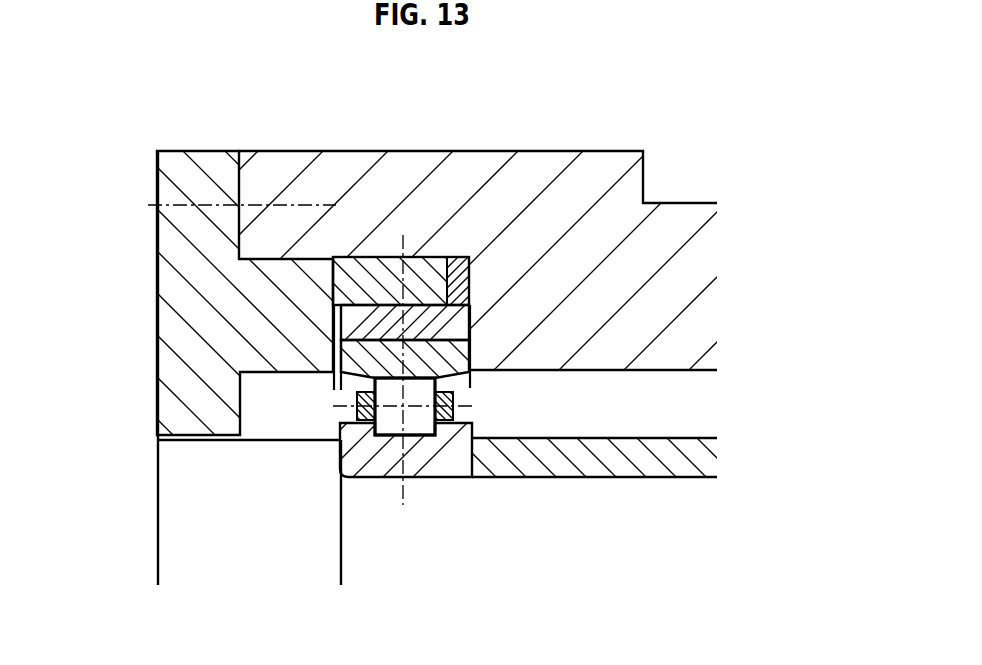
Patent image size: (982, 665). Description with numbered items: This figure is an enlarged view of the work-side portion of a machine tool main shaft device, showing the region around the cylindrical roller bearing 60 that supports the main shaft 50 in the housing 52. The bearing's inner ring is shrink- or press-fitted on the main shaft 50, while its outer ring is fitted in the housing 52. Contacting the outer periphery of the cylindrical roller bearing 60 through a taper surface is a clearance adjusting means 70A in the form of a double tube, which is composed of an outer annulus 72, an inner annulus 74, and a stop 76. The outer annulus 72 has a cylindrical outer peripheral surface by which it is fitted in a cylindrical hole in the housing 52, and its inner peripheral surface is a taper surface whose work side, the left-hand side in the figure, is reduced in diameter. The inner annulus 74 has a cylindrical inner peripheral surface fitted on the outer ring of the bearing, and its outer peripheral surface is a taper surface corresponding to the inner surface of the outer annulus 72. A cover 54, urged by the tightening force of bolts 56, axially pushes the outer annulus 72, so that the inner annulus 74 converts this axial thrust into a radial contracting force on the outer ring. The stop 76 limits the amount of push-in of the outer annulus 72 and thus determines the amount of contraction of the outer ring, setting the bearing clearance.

The main shaft 50 is at (192, 515).
The housing 52 is at (602, 173).
The cover 54 is at (210, 160).
The bolts 56 is at (287, 205).
The cylindrical roller bearing 60 is at (446, 490).
The clearance adjusting means 70A is at (424, 354).
The outer annulus 72 is at (358, 277).
The inner annulus 74 is at (430, 317).
The stop 76 is at (458, 262).